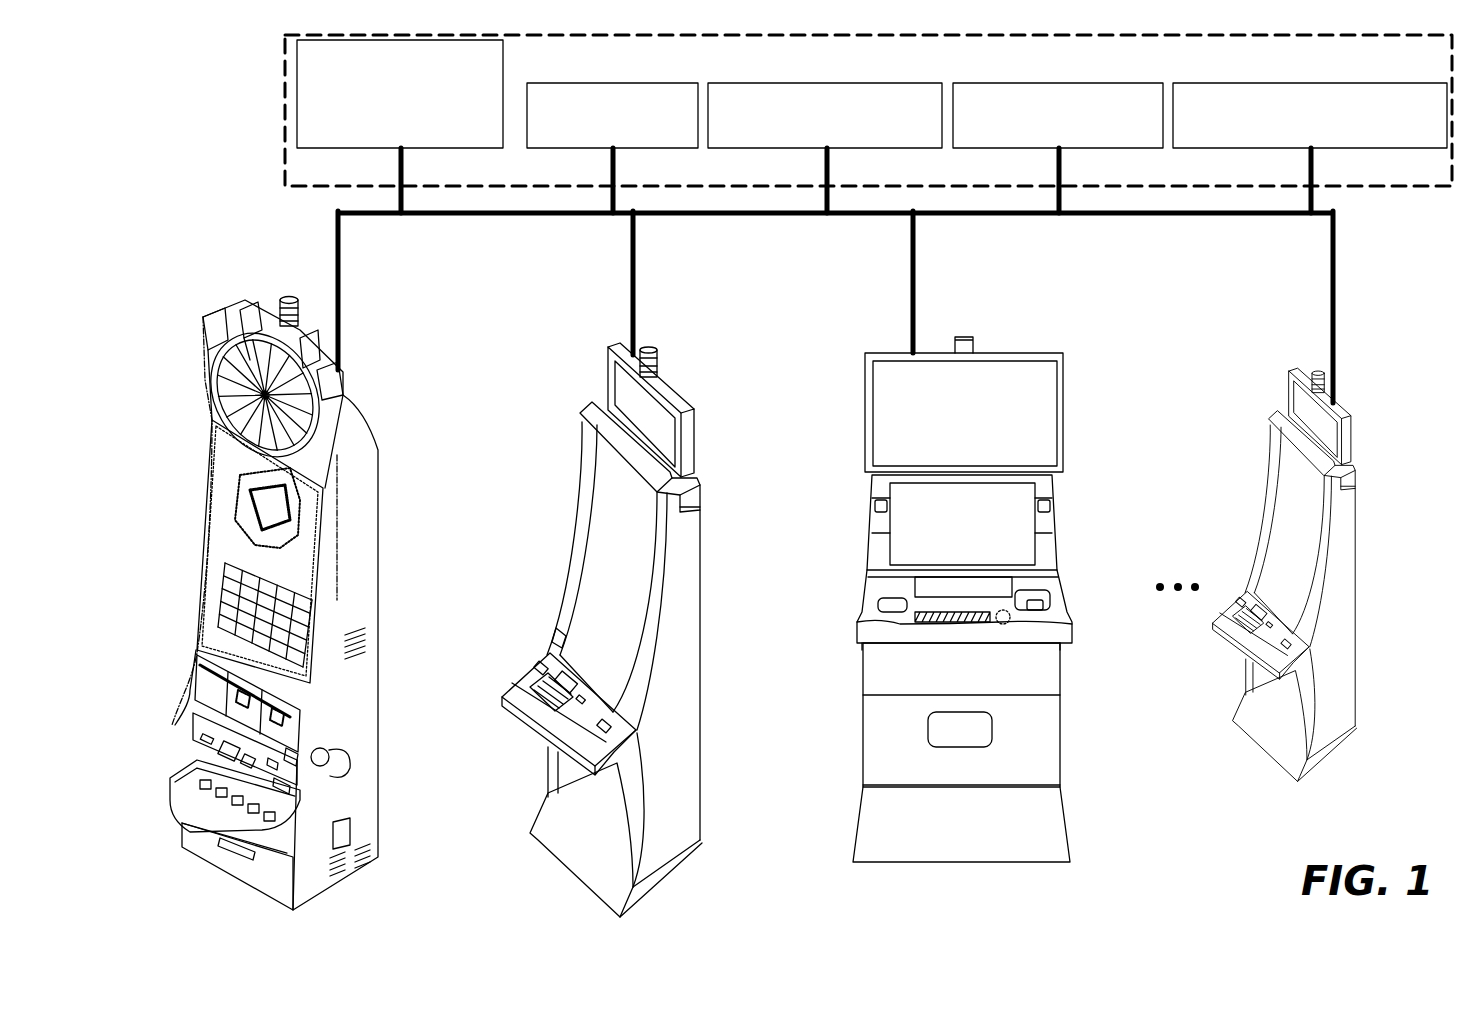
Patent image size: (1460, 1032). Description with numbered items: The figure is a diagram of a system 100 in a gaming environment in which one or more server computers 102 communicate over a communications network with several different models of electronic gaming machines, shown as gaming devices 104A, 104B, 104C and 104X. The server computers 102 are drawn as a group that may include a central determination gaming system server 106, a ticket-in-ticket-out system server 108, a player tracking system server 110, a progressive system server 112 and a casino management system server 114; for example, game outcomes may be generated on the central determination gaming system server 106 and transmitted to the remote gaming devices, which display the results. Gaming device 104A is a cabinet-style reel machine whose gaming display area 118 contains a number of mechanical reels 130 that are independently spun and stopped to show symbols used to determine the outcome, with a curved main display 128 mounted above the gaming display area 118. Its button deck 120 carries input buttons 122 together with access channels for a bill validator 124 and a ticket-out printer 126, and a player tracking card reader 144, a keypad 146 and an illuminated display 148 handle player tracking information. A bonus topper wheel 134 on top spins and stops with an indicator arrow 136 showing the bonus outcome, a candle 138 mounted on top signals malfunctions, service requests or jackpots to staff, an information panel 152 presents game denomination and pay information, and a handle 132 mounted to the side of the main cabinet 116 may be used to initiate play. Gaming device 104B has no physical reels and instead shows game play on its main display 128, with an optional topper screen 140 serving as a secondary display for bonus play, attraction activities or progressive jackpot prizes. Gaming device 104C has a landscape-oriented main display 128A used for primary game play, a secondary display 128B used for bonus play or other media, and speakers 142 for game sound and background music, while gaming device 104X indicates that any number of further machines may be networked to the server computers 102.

The system 100 is at (195, 113).
The server computers 102 is at (1333, 190).
The gaming device 104A is at (163, 352).
The gaming device 104B is at (558, 405).
The gaming device 104C is at (858, 320).
The gaming device 104X is at (1265, 372).
The central determination gaming system server 106 is at (455, 150).
The ticket-in-ticket-out (TITO) system server 108 is at (655, 150).
The player tracking system server 110 is at (873, 150).
The progressive system server 112 is at (1125, 150).
The casino management system server 114 is at (1358, 150).
The main cabinet 116 is at (197, 815).
The gaming display area 118 is at (197, 680).
The button deck 120 is at (195, 787).
The buttons 122 is at (200, 773).
The bill validator 124 is at (290, 787).
The ticket-out printer 126 is at (210, 760).
The main display 128 is at (300, 527).
The main display 128A is at (1040, 515).
The secondary display 128B is at (1062, 425).
The mechanical reels 130 is at (215, 682).
The handle 132 is at (302, 743).
The bonus topper wheel 134 is at (313, 420).
The indicator arrow 136 is at (262, 325).
The candle 138 is at (298, 312).
The topper screen 140 is at (693, 440).
The speakers 142 is at (878, 500).
The player tracking card reader 144 is at (278, 765).
The keypad 146 is at (298, 753).
The illuminated display 148 is at (213, 740).
The information panel 152 is at (227, 743).